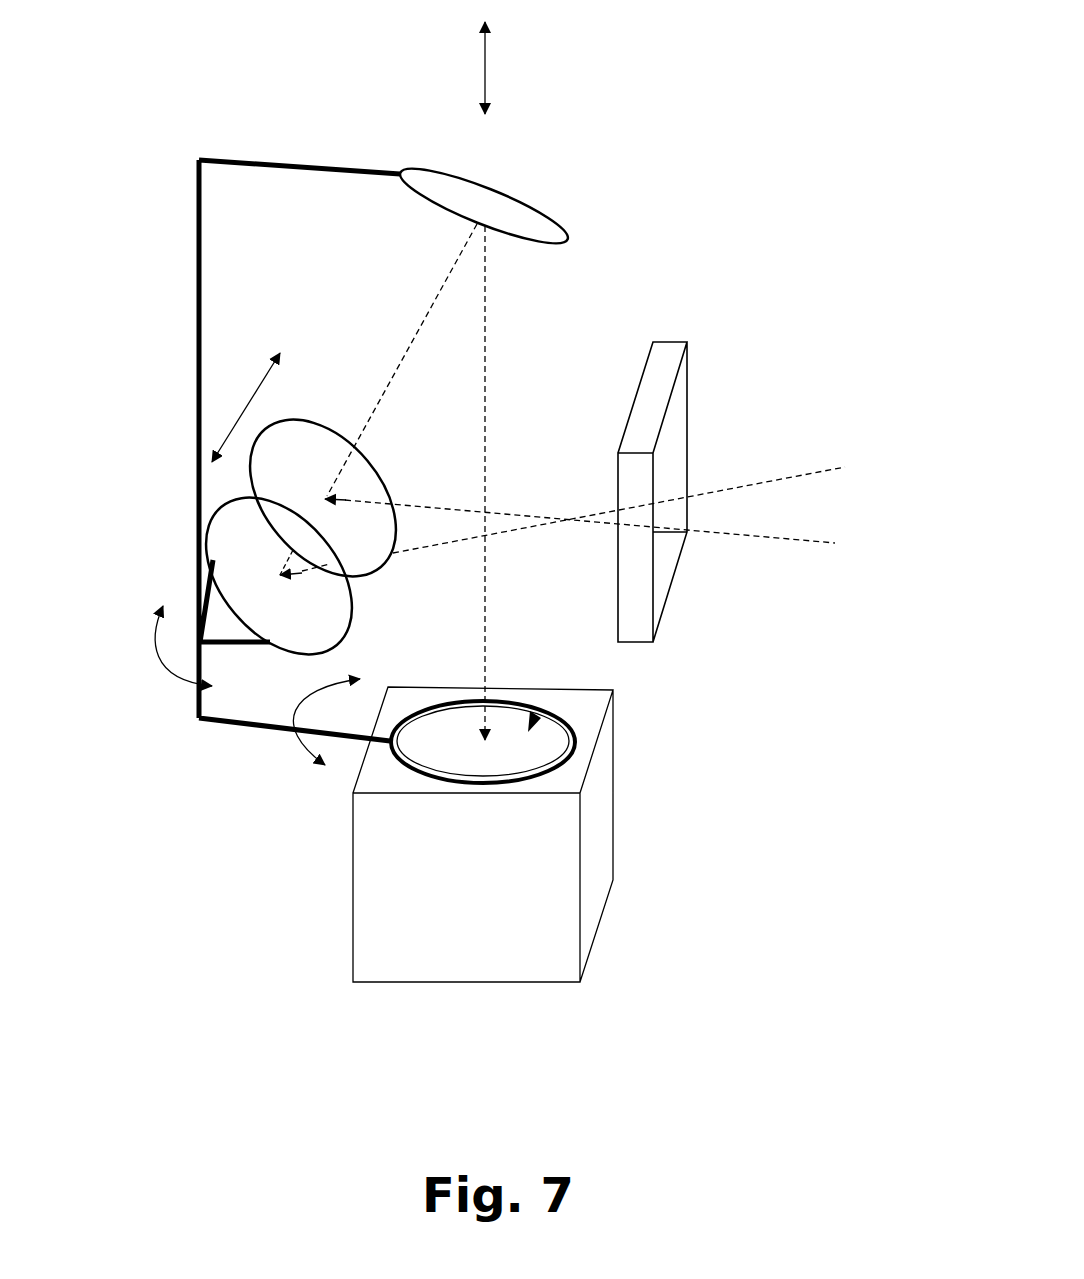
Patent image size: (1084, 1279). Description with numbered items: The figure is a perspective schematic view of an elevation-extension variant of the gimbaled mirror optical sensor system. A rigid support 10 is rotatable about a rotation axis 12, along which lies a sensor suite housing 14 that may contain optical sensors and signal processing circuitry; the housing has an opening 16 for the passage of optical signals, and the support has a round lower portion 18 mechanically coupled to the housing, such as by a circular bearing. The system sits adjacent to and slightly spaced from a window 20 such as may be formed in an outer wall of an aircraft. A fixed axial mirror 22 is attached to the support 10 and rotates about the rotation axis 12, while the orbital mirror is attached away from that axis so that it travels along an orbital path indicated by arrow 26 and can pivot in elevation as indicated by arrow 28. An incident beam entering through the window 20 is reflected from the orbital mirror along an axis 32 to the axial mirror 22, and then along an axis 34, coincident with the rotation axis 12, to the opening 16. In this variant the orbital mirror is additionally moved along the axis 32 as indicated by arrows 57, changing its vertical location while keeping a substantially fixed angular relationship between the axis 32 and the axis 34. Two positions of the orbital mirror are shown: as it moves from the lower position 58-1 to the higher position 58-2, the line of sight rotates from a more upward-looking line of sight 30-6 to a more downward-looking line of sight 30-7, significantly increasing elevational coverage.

The rigid support 10 is at (198, 315).
The rotation axis 12 is at (485, 63).
The sensor suite housing 14 is at (607, 853).
The opening 16 is at (533, 715).
The round lower portion 18 is at (565, 722).
The window 20 is at (677, 353).
The fixed axial mirror 22 is at (555, 218).
The arrow 26 is at (310, 760).
The arrow 28 is at (188, 678).
The more upward-looking line of sight 30-6 is at (772, 478).
The more downward-looking line of sight 30-7 is at (787, 543).
The axis 32 is at (393, 365).
The axis 34 is at (485, 373).
The arrows 57 is at (245, 408).
The lower position 58-1 is at (210, 520).
The higher position 58-2 is at (253, 487).